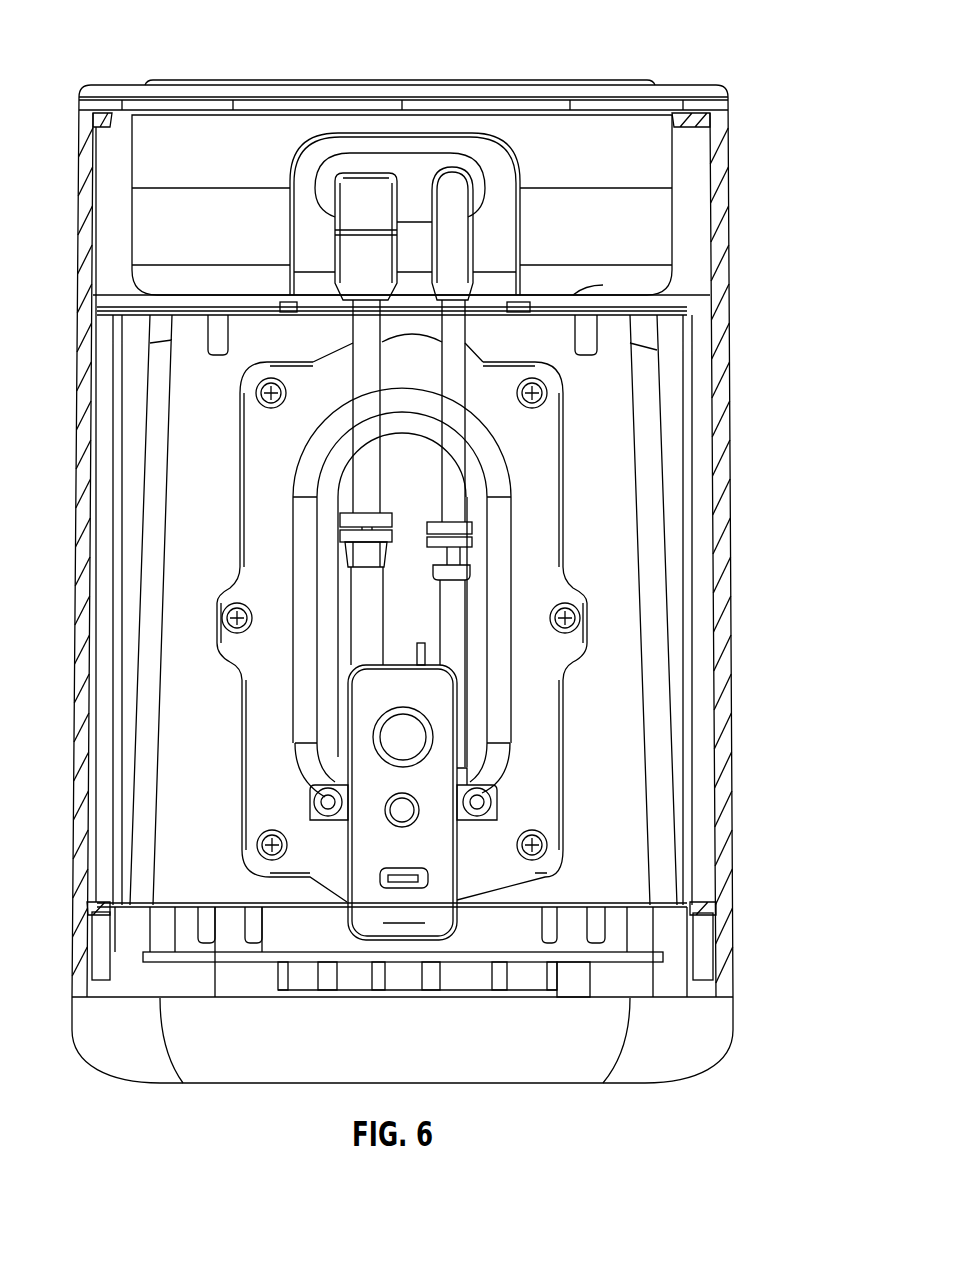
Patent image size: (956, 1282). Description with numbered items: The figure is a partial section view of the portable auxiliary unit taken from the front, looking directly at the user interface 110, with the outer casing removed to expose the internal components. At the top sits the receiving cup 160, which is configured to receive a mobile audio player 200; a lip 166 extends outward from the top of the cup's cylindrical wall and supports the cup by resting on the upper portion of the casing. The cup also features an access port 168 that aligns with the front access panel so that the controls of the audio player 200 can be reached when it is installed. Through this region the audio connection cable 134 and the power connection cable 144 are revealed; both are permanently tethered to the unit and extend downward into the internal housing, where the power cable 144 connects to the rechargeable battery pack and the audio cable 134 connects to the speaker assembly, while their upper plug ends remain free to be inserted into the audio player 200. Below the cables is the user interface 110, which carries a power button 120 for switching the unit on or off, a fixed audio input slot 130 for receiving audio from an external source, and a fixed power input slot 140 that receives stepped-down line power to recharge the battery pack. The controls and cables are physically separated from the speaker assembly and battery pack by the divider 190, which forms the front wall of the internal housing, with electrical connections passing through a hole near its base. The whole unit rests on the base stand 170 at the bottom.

The audio player 200 is at (181, 80).
The lip 166 is at (713, 85).
The receiving cup 160 is at (573, 133).
The access port 168 is at (467, 133).
The power connection cable 144 is at (363, 360).
The audio connection cable 134 is at (460, 362).
The divider 190 is at (620, 397).
The user interface 110 is at (491, 791).
The power button 120 is at (437, 743).
The fixed audio input slot 130 is at (430, 810).
The fixed power input slot 140 is at (430, 873).
The base stand 170 is at (700, 1067).